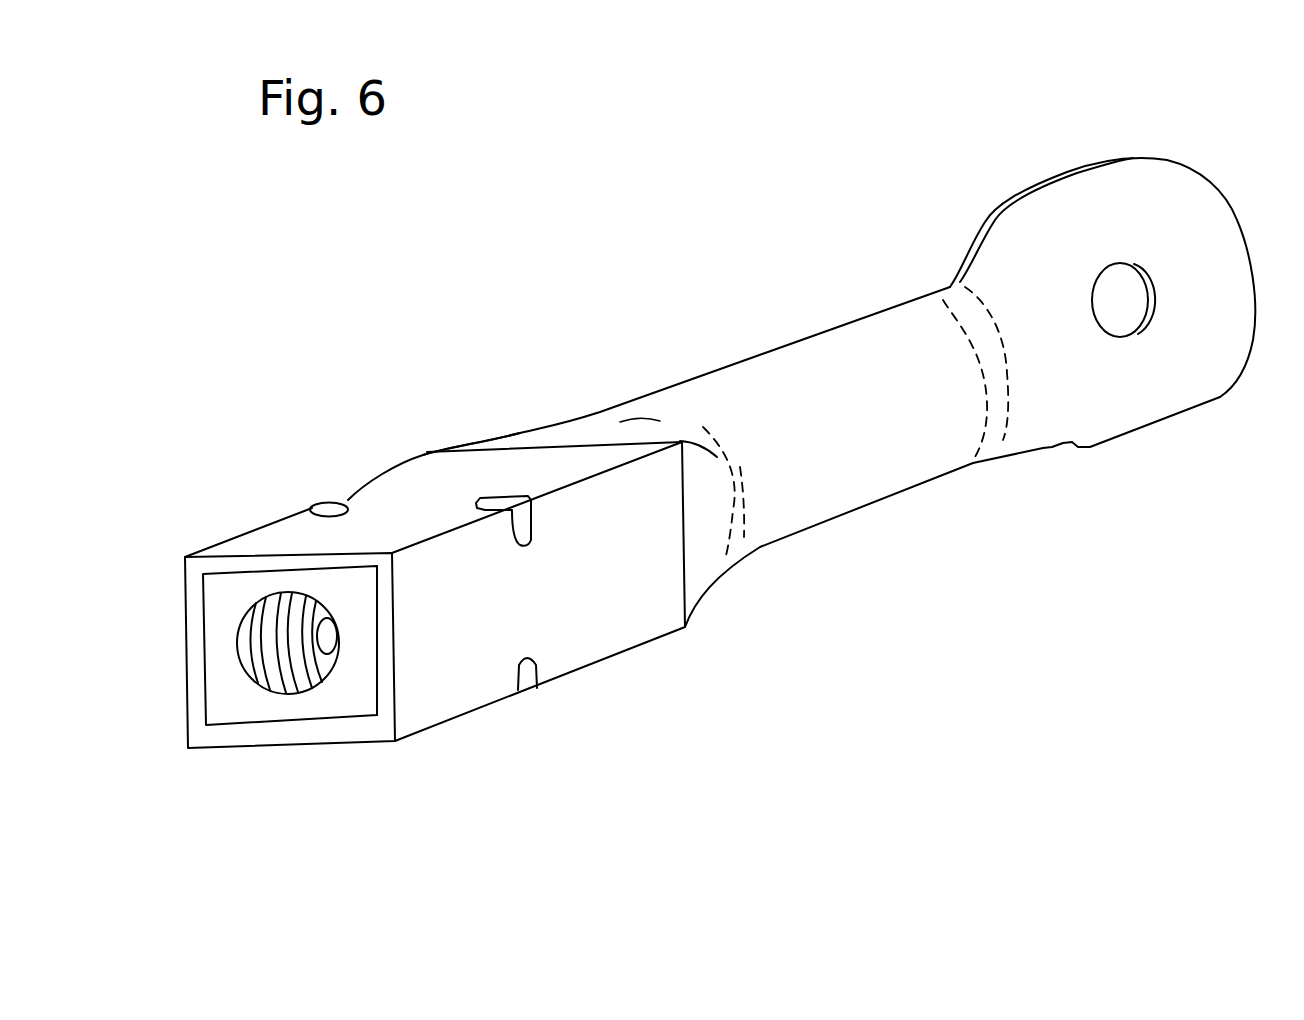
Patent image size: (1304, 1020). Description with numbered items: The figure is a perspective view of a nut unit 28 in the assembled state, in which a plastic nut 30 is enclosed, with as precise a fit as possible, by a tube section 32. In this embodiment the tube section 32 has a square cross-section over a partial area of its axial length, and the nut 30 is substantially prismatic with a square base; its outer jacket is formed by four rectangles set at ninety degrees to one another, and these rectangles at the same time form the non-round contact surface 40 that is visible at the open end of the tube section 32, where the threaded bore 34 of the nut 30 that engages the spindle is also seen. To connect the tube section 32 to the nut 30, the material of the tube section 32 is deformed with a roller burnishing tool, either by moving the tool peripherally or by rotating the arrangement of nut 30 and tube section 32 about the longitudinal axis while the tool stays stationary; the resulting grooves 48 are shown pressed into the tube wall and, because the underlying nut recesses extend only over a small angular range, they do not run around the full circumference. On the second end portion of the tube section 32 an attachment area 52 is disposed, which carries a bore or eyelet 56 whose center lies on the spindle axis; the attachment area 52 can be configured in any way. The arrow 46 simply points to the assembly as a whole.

The nut unit 28 is at (638, 718).
The nut 30 is at (347, 707).
The tube section 32 is at (870, 467).
The threaded bore 34 is at (262, 682).
The non-round contact surface 40 is at (378, 632).
The drawbar assembly 46 is at (443, 386).
The grooves 48 is at (305, 507).
The attachment area 52 is at (1040, 220).
The bore or eyelet 56 is at (1127, 303).